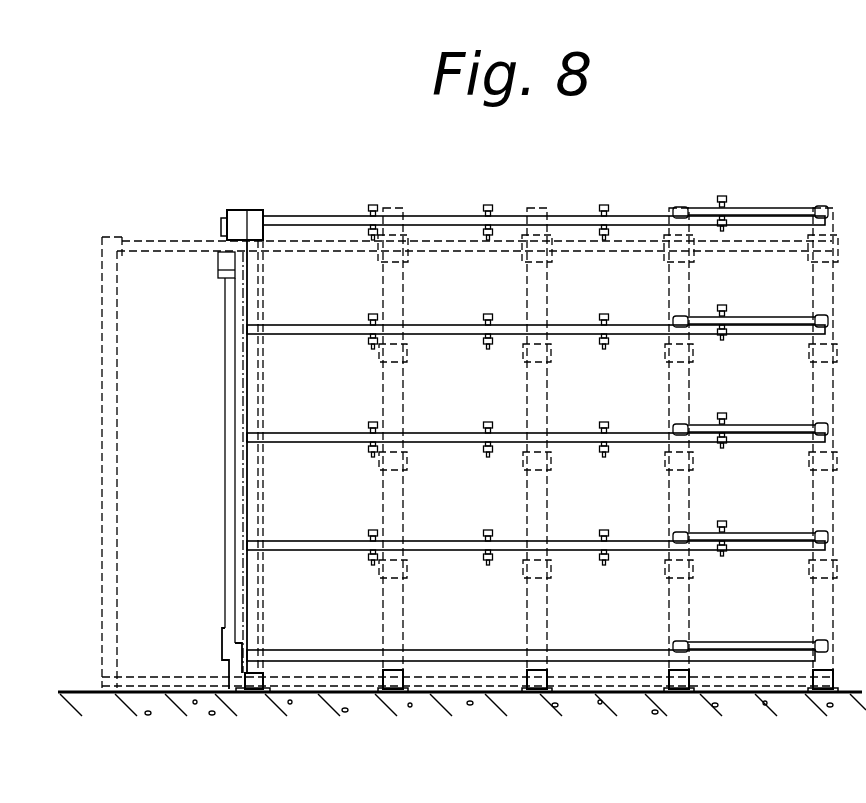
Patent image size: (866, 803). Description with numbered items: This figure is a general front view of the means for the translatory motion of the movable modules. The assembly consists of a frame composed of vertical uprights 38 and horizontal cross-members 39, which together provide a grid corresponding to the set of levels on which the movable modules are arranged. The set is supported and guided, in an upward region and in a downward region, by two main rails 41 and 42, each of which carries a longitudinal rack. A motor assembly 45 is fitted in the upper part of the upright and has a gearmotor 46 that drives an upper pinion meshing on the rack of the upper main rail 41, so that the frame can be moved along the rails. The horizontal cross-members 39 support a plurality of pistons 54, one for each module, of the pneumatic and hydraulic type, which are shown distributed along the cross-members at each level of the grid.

The vertical upright 38 is at (258, 297).
The horizontal cross-member 39 is at (330, 217).
The main rail 41 is at (163, 240).
The main rail 42 is at (188, 684).
The motor assembly 45 is at (222, 268).
The gearmotor 46 is at (222, 227).
The piston 54 is at (492, 211).